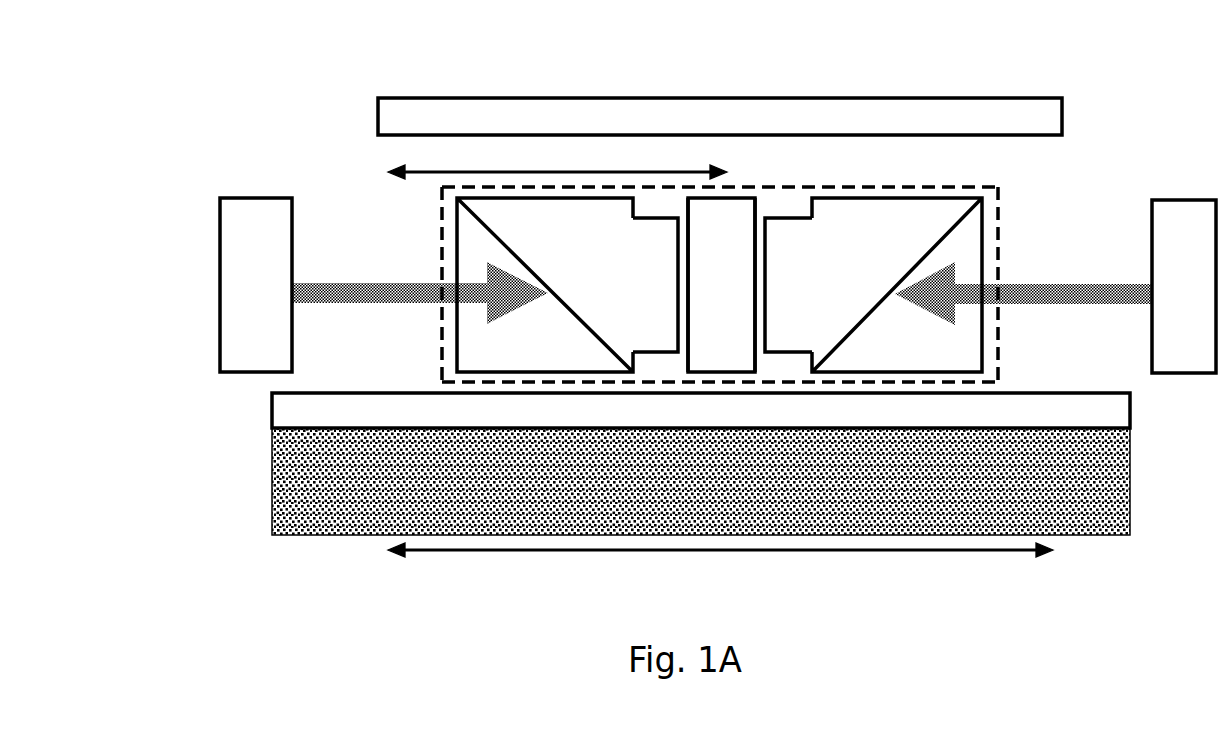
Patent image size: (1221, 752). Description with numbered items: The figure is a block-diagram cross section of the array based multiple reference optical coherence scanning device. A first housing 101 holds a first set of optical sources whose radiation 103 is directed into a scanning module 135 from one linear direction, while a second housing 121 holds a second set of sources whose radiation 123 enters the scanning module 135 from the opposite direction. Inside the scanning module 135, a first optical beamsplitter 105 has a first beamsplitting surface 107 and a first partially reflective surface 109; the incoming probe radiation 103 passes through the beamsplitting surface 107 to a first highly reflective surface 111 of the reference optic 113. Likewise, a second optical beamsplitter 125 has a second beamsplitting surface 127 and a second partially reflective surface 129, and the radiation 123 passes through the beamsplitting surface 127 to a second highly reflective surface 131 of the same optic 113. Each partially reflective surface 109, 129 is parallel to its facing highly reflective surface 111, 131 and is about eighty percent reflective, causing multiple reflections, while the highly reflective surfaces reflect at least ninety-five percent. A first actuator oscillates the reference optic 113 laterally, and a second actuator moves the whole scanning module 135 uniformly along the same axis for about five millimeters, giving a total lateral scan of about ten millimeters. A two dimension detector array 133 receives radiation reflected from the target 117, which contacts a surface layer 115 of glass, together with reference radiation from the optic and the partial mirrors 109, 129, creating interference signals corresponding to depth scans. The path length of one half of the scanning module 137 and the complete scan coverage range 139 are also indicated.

The first housing 101 is at (215, 245).
The radiation 103 is at (325, 278).
The first optical beamsplitter 105 is at (457, 325).
The first beamsplitting surface 107 is at (598, 350).
The first partially reflective surface 109 is at (668, 263).
The first highly reflective surface 111 is at (694, 220).
The reference optic 113 is at (757, 208).
The surface layer 115 is at (265, 420).
The target 117 is at (265, 500).
The second housing 121 is at (1200, 198).
The radiation 123 is at (1035, 278).
The second optical beamsplitter 125 is at (987, 328).
The second beamsplitting surface 127 is at (877, 292).
The second partially reflective surface 129 is at (768, 255).
The second highly reflective surface 131 is at (748, 268).
The two dimension detector array 133 is at (477, 95).
The scanning module 135 is at (988, 185).
The path length of one half of the scanning module 137 is at (410, 170).
The complete scan coverage range 139 is at (420, 560).